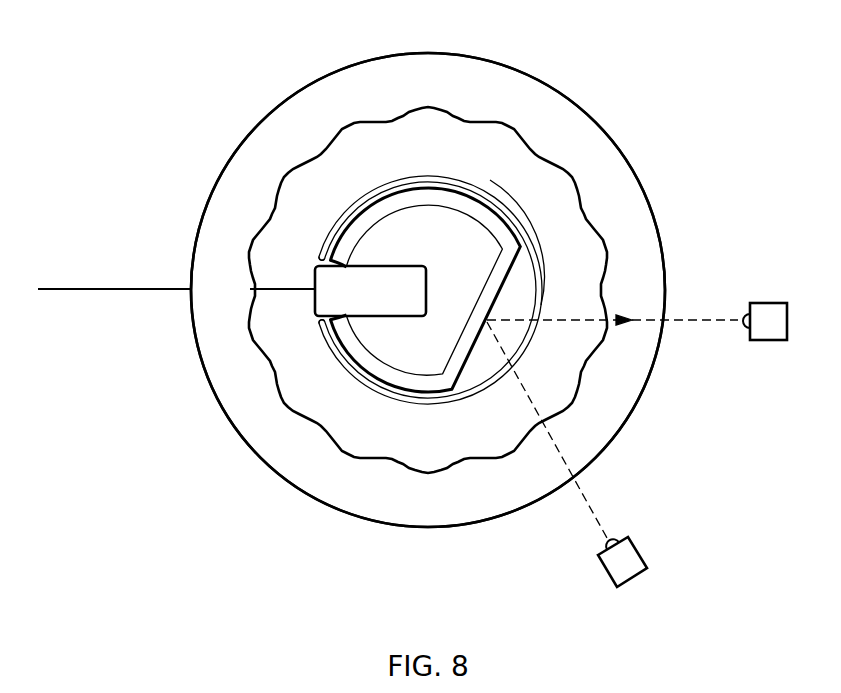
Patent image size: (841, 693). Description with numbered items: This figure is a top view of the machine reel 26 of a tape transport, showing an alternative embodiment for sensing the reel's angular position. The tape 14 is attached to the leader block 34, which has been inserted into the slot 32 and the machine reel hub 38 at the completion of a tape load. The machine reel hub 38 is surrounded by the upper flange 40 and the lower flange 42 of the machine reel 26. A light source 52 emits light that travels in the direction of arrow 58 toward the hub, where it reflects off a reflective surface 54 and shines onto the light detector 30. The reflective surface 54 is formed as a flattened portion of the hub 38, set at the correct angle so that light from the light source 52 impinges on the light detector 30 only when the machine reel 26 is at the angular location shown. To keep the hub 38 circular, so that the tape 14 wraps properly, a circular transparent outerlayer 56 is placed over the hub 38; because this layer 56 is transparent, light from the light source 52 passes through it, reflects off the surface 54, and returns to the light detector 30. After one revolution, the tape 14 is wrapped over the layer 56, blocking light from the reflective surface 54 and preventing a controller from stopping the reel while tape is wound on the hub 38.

The tape 14 is at (64, 288).
The machine reel 26 is at (634, 135).
The light detector 30 is at (768, 303).
The slot 32 is at (314, 259).
The leader block 34 is at (392, 266).
The machine reel hub 38 is at (445, 196).
The upper flange 40 is at (515, 66).
The lower flange 42 is at (506, 152).
The light source 52 is at (640, 546).
The reflective surface 54 is at (497, 295).
The circular transparent outerlayer 56 is at (524, 243).
The arrow 58 is at (600, 515).